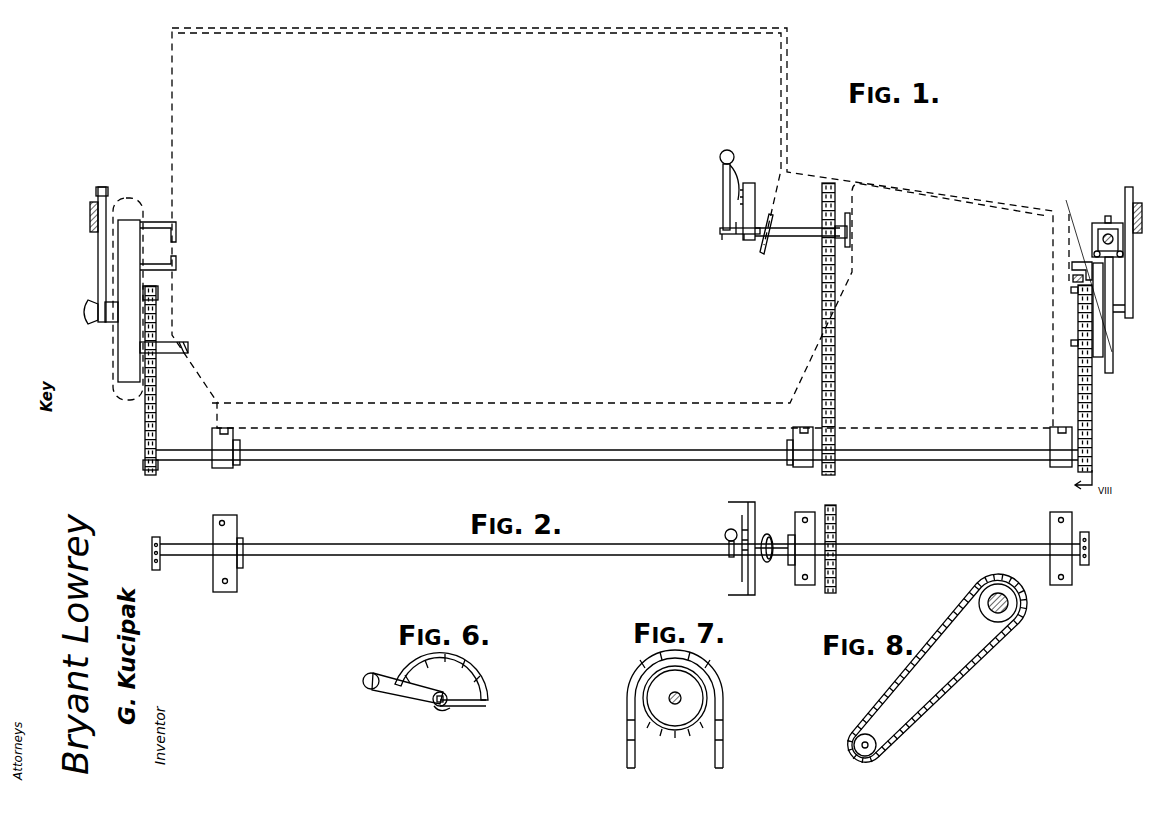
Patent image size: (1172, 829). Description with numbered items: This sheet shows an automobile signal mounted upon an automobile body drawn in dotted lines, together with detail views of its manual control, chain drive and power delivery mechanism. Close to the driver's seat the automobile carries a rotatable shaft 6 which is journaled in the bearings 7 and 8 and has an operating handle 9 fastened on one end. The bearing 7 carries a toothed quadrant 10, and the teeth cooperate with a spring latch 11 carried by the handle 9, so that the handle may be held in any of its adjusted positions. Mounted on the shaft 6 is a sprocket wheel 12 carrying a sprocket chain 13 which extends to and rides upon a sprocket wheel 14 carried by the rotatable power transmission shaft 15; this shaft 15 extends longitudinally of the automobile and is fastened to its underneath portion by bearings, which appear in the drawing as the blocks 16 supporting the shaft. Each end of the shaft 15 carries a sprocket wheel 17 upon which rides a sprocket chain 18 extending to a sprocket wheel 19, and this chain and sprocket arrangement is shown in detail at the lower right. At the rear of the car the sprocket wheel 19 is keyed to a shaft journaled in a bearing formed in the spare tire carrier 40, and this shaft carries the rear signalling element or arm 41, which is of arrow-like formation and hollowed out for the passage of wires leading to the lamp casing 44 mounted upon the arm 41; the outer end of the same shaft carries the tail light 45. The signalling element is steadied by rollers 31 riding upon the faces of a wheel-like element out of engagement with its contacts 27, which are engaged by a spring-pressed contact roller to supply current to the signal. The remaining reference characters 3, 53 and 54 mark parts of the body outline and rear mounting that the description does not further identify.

In FIG. 1, the machine frame 3 is at (484, 237).
In FIG. 1, the rotatable shaft 6 is at (795, 234).
In FIG. 2, the rotatable shaft 6 is at (782, 558).
In FIG. 1, the bearing 7 is at (764, 224).
In FIG. 2, the bearing 7 is at (768, 534).
In FIG. 1, the bearing 8 is at (852, 233).
In FIG. 1, the operating handle 9 is at (723, 198).
In FIG. 2, the operating handle 9 is at (728, 550).
In FIG. 6, the operating handle 9 is at (385, 690).
In FIG. 1, the quadrant 10 is at (750, 186).
In FIG. 2, the quadrant 10 is at (748, 574).
In FIG. 6, the quadrant 10 is at (441, 679).
In FIG. 1, the spring latch 11 is at (746, 160).
In FIG. 1, the sprocket wheel 12 is at (828, 183).
In FIG. 2, the sprocket wheel 12 is at (838, 580).
In FIG. 7, the sprocket wheel 12 is at (645, 682).
In FIG. 1, the sprocket chain 13 is at (836, 388).
In FIG. 7, the sprocket chain 13 is at (627, 750).
In FIG. 1, the sprocket wheel 14 is at (837, 468).
In FIG. 1, the power transmission shaft 15 is at (456, 460).
In FIG. 2, the power transmission shaft 15 is at (508, 556).
In FIG. 1, the bearing block 16 is at (226, 470).
In FIG. 2, the bearing block 16 is at (218, 500).
In FIG. 1, the sprocket wheel 17 is at (145, 456).
In FIG. 8, the sprocket wheel 17 is at (878, 752).
In FIG. 1, the sprocket chain 18 is at (145, 410).
In FIG. 8, the sprocket chain 18 is at (970, 684).
In FIG. 1, the sprocket wheel 19 is at (160, 300).
In FIG. 8, the sprocket wheel 19 is at (1019, 606).
In FIG. 1, the contact 27 is at (1126, 326).
In FIG. 1, the roller 31 is at (1085, 256).
In FIG. 1, the spare tire carrier 40 is at (130, 264).
In FIG. 1, the rear signalling element or arm 41 is at (98, 262).
In FIG. 1, the lamp casing 44 is at (90, 211).
In FIG. 1, the tail light 45 is at (80, 312).
In FIG. 1, the housing 53 is at (1081, 273).
In FIG. 1, the bracket 54 is at (1100, 238).